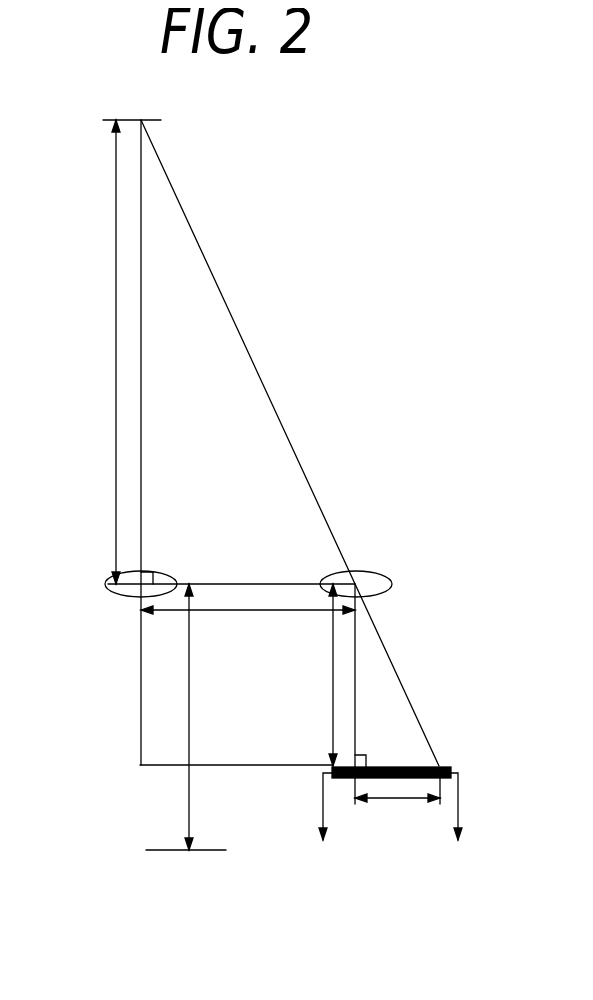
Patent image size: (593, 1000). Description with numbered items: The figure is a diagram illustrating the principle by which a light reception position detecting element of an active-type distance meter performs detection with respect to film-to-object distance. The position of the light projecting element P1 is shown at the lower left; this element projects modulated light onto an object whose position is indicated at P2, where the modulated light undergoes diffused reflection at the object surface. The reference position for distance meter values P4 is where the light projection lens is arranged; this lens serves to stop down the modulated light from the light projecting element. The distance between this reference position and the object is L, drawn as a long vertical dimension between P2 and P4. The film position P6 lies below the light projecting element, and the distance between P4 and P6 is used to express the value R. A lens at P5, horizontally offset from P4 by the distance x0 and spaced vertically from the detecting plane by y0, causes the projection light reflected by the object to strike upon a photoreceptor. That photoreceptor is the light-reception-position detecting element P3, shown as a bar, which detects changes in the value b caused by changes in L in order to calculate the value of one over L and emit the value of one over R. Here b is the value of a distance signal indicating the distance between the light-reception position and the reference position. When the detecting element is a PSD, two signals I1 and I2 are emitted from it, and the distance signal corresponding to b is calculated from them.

The position of light projecting element P1 is at (216, 765).
The position of object P2 is at (126, 104).
The light-reception-position detecting element P3 is at (412, 770).
The reference position for distance meter values P4 is at (122, 568).
The lens P5 is at (370, 568).
The film position P6 is at (161, 851).
The distance between reference position and object L is at (108, 352).
The horizontal distance x0 between P4 and P5 x0 is at (248, 624).
The vertical distance y0 between lens plane and detector y0 is at (315, 675).
The distance signal value b is at (397, 805).
The PSD output signal I1 is at (455, 825).
The PSD output signal I2 is at (327, 825).